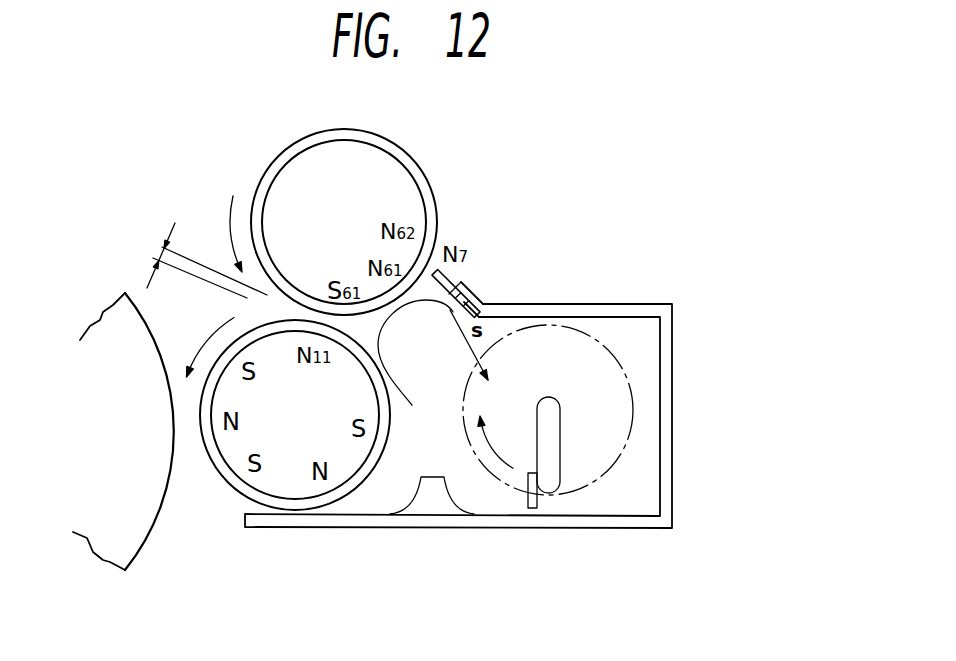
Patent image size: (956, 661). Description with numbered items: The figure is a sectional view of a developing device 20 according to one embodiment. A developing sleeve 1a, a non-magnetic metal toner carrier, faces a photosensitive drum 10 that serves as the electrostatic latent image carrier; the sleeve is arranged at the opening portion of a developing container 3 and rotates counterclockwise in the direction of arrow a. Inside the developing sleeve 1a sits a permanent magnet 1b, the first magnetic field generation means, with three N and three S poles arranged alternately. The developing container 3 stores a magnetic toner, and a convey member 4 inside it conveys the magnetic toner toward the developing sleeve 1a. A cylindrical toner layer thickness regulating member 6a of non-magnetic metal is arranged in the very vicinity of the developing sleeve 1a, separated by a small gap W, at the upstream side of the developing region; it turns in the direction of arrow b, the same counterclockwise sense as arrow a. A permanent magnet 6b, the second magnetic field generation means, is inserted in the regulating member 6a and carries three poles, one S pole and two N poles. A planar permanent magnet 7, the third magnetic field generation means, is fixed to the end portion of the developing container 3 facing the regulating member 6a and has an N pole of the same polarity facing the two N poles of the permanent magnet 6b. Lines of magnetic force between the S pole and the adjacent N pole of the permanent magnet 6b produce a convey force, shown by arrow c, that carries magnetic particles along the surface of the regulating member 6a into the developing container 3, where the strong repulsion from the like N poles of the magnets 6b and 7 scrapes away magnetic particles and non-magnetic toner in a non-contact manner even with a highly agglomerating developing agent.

The developing sleeve 1a is at (282, 417).
The permanent magnet 1b is at (293, 443).
The developing container 3 is at (475, 405).
The convey member 4 is at (553, 474).
The toner layer thickness regulating member 6a is at (340, 211).
The permanent magnet 6b is at (326, 222).
The planar permanent magnet 7 is at (463, 269).
The photosensitive drum 10 is at (129, 439).
The developing device 20 is at (531, 356).
The gap between rollers W is at (199, 260).
The arrow a is at (209, 345).
The arrow b is at (224, 234).
The arrow c is at (478, 297).